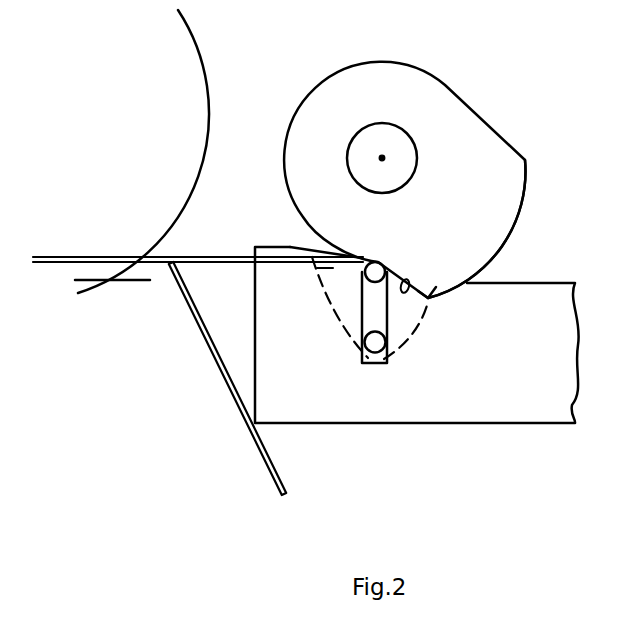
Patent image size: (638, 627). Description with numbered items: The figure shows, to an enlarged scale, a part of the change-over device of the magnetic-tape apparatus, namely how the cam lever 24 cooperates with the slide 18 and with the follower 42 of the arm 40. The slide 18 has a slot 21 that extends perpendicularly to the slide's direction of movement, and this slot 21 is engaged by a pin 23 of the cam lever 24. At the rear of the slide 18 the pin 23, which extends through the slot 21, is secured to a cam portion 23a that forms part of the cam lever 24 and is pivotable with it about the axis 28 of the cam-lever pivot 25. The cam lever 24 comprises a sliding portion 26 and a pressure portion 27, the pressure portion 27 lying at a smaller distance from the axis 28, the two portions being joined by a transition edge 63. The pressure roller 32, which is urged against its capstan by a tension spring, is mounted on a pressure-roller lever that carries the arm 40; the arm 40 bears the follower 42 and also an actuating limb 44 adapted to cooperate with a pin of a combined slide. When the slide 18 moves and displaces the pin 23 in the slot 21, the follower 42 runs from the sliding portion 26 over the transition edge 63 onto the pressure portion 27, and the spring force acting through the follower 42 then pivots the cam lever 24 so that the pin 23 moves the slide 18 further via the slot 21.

The slide 18 is at (503, 413).
The slot 21 is at (377, 315).
The pin 23 is at (372, 338).
The cam portion 23a is at (287, 257).
The cam lever 24 is at (440, 118).
The cam-lever pivot 25 is at (395, 170).
The sliding portion 26 is at (498, 252).
The pressure portion 27 is at (408, 276).
The axis 28 is at (382, 158).
The pressure roller 32 is at (157, 213).
The arm 40 is at (277, 264).
The follower 42 is at (376, 284).
The actuating limb 44 is at (212, 352).
The transition edge 63 is at (430, 297).